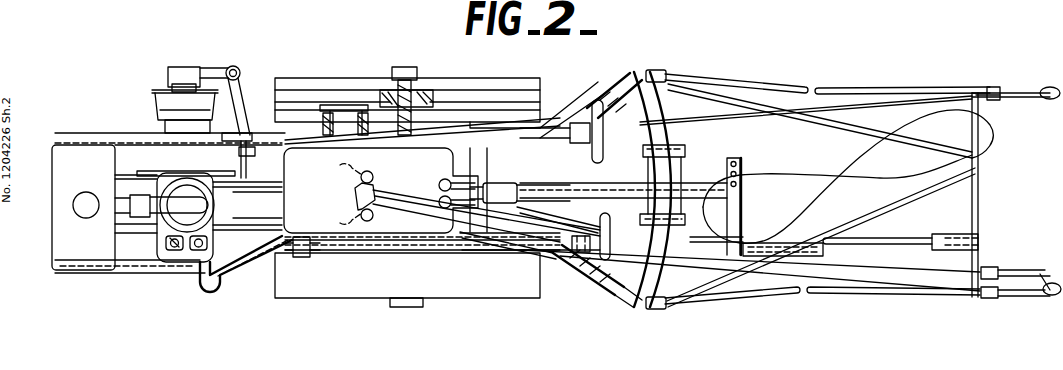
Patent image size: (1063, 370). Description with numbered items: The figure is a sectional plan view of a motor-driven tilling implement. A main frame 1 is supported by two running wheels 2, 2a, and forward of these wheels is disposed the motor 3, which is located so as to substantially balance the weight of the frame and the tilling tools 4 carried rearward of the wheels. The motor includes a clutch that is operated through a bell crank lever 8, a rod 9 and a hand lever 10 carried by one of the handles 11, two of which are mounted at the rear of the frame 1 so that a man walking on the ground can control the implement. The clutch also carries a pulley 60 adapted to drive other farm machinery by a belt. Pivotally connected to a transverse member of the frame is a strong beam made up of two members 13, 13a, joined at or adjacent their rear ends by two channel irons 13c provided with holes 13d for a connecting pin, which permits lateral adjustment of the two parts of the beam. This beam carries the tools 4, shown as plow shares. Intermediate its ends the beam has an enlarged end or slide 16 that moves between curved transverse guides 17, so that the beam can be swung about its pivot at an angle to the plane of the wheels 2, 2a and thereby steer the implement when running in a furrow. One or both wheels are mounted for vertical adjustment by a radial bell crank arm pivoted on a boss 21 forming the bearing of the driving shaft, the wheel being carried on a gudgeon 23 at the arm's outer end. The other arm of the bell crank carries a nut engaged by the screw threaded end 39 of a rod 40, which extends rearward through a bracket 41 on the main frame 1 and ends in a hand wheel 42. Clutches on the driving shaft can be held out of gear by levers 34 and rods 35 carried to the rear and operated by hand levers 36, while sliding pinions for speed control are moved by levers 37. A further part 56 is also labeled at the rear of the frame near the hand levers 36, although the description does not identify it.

The main frame 1 is at (266, 140).
The running wheel 2 is at (468, 82).
The running wheel 2a is at (498, 292).
The motor 3 is at (186, 222).
The tilling tool 4 is at (838, 190).
The bell crank lever 8 is at (211, 68).
The rod 9 is at (712, 118).
The hand lever 10 is at (1010, 100).
The handle 11 is at (863, 90).
The beam member 13 is at (709, 190).
The beam member 13a is at (675, 258).
The channel iron 13c is at (742, 173).
The hole 13d is at (741, 160).
The slide 16 is at (682, 208).
The curved transverse guide 17 is at (656, 108).
The boss 21 is at (326, 113).
The gudgeon 23 is at (396, 88).
The lever 34 is at (376, 196).
The rod 35 is at (405, 201).
The hand lever 36 is at (1012, 270).
The lever 37 is at (500, 182).
The screw threaded end 39 is at (312, 252).
The rod 40 is at (482, 246).
The bracket 41 is at (580, 254).
The hand wheel 42 is at (610, 262).
The clamp 56 is at (982, 241).
The pulley 60 is at (154, 110).